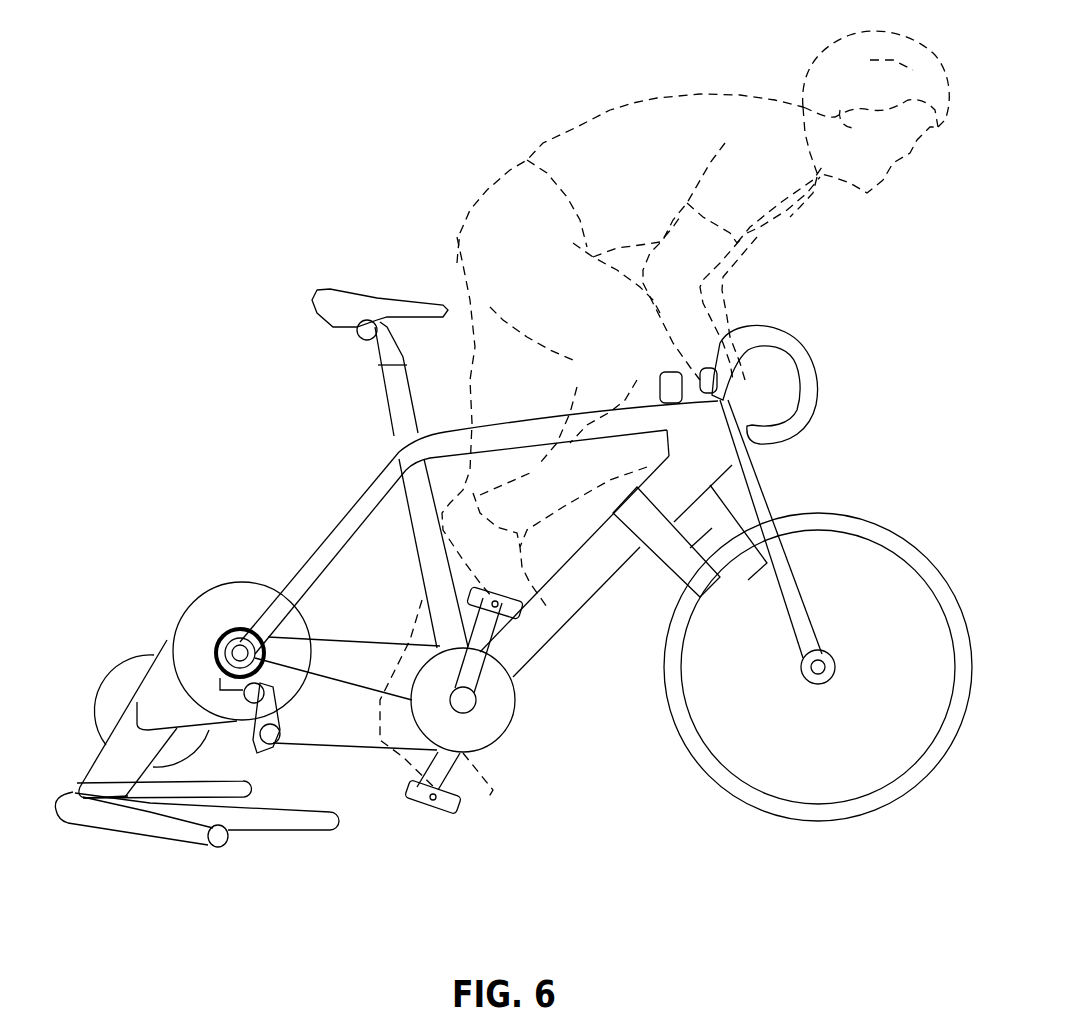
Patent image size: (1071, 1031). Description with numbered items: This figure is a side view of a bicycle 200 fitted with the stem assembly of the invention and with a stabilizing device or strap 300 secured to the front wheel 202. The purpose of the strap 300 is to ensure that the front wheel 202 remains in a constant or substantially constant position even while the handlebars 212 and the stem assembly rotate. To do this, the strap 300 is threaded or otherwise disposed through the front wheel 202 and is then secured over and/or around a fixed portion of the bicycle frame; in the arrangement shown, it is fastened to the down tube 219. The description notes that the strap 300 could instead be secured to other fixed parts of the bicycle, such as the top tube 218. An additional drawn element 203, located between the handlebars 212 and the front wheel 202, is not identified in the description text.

The bicycle 200 is at (318, 487).
The front wheel 202 is at (918, 526).
The fork 203 is at (770, 567).
The handlebars 212 is at (807, 362).
The top tube 218 is at (495, 435).
The down tube 219 is at (575, 587).
The stabilizing device or strap 300 is at (750, 482).